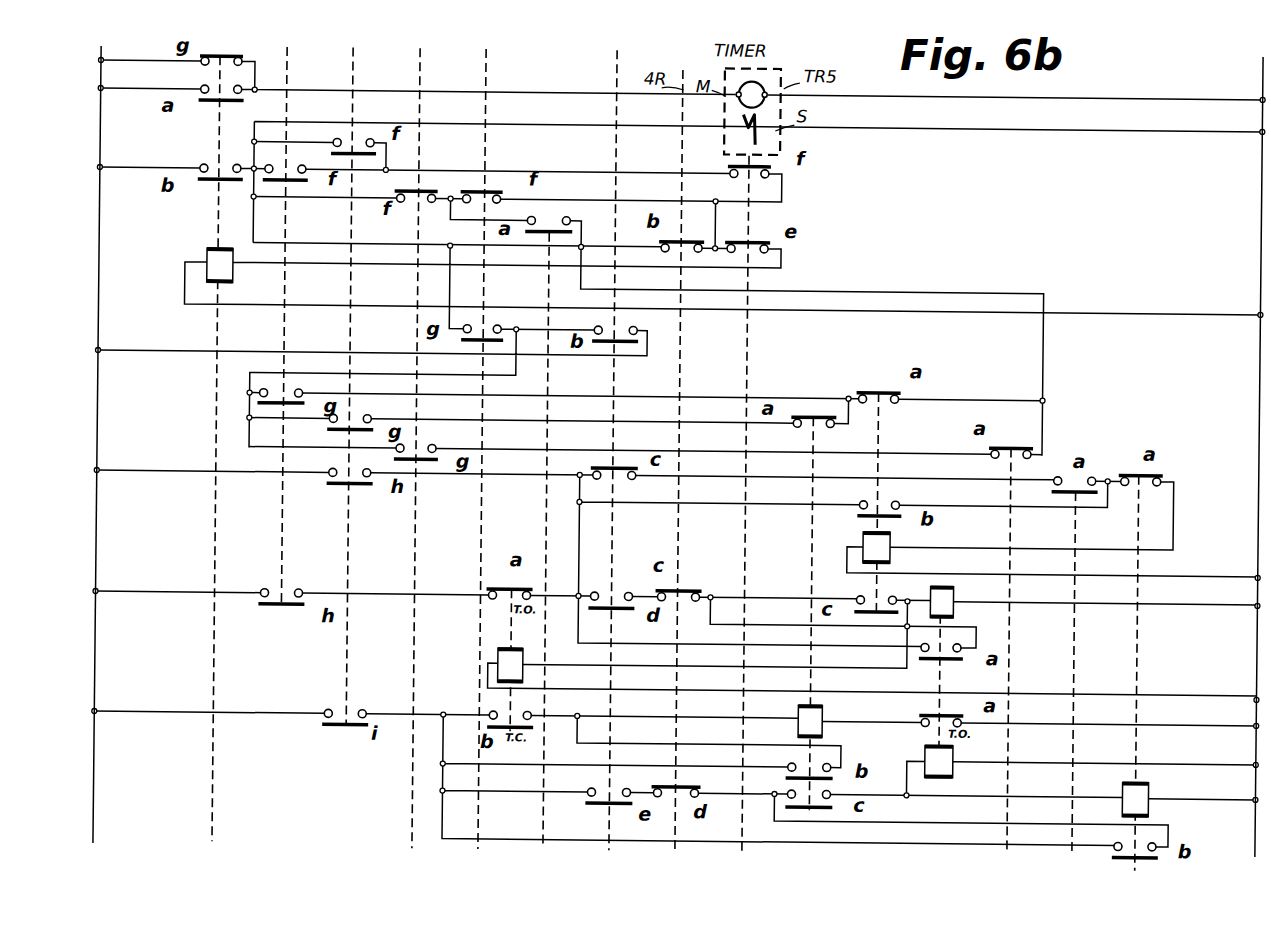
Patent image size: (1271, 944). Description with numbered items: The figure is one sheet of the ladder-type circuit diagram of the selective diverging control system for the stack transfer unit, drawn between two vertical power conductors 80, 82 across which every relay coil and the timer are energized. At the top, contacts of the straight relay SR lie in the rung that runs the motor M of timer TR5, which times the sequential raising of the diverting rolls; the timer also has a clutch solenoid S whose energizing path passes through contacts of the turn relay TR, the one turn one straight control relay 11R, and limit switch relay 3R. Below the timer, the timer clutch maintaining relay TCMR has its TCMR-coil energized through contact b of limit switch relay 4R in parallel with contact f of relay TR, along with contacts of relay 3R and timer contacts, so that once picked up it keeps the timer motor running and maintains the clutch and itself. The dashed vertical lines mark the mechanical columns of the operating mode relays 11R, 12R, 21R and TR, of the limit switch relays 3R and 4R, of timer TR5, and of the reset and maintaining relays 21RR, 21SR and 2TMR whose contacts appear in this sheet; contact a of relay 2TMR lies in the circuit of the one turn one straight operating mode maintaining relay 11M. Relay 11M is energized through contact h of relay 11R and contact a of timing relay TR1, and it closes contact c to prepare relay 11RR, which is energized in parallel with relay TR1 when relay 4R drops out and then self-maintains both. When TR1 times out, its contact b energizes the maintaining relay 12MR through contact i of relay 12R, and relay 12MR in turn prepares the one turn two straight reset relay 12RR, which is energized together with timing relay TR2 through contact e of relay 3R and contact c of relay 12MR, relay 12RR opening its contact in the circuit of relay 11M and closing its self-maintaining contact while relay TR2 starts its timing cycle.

The power conductor 80 is at (101, 398).
The power conductor 82 is at (1263, 345).
The straight relay SR is at (224, 56).
The timer clutch maintaining relay TCMR is at (215, 843).
The timer clutch maintaining relay coil TCMR-coil is at (207, 260).
The one turn one straight control relay 11R is at (289, 60).
The one turn two straight control relay 12R is at (354, 60).
The operating mode relay 21R is at (418, 843).
The turn relay TR is at (478, 848).
The reset relay 21RR is at (551, 846).
The limit switch relay 3R is at (610, 845).
The limit switch relay 4R is at (680, 845).
The timer TR5 is at (742, 845).
The relay 21SR is at (1015, 843).
The maintaining relay 2TMR is at (1082, 845).
The one turn one straight operating mode maintaining relay 11M is at (890, 540).
The relay 11RR is at (952, 584).
The timing relay TR1 is at (500, 655).
The maintaining relay 12MR is at (830, 708).
The one turn two straight reset relay 12RR is at (1157, 787).
The timing relay TR2 is at (962, 768).